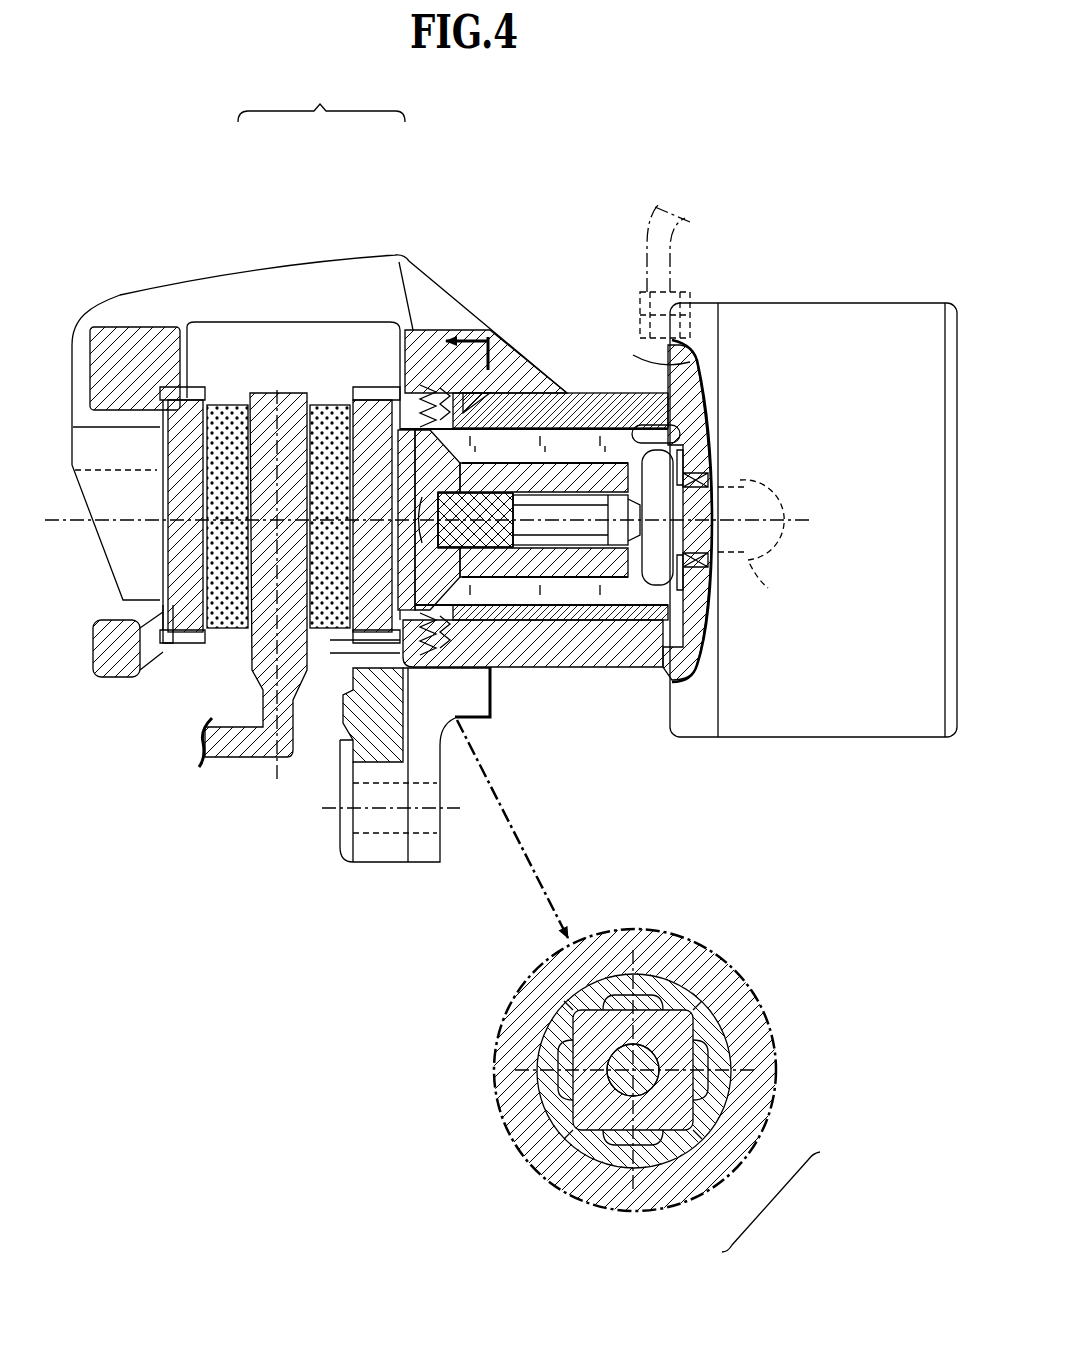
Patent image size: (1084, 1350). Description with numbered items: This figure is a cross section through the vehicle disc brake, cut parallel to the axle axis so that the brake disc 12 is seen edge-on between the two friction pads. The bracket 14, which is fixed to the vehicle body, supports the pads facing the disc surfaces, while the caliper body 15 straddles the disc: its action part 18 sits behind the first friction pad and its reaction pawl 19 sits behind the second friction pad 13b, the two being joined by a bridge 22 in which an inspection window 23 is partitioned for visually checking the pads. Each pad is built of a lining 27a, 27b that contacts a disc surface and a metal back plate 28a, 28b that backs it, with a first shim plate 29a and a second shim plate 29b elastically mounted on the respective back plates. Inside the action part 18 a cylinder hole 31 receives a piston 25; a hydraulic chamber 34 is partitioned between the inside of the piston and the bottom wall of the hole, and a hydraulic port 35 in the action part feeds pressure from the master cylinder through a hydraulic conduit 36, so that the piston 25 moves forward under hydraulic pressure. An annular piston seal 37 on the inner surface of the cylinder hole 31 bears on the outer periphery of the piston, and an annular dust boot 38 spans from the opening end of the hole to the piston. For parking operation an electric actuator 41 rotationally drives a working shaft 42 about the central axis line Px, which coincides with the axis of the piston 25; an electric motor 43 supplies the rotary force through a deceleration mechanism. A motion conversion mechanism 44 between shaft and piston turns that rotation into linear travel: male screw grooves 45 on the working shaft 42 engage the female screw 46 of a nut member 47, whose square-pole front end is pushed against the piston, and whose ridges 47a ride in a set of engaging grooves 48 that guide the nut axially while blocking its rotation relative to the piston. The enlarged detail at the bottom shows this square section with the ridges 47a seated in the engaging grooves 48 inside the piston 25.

The brake disc 12 is at (267, 430).
The second friction pad 13b is at (110, 695).
The bracket 14 is at (383, 868).
The caliper body 15 is at (321, 100).
The action part 18 is at (486, 312).
The reaction pawl 19 is at (84, 334).
The bridge 22 is at (328, 258).
The inspection window 23 is at (180, 347).
The piston 25 is at (585, 624).
The lining 27a is at (323, 652).
The lining 27b is at (225, 632).
The metal back plate 28a is at (333, 640).
The metal back plate 28b is at (177, 628).
The first shim plate 29a is at (402, 410).
The second shim plate 29b is at (157, 533).
The cylinder hole 31 is at (680, 458).
The hydraulic chamber 34 is at (641, 441).
The hydraulic port 35 is at (693, 362).
The hydraulic conduit 36 is at (688, 250).
The annular piston seal 37 is at (507, 397).
The annular dust boot 38 is at (453, 363).
The electric actuator 41 is at (846, 742).
The working shaft 42 is at (560, 553).
The electric motor 43 is at (770, 740).
The motion conversion mechanism 44 is at (530, 452).
The male screw grooves 45 is at (516, 605).
The female screw 46 is at (420, 530).
The nut member 47 is at (599, 574).
The ridges 47a is at (573, 1013).
The engaging grooves 48 is at (695, 1103).
The central axis line Px is at (759, 543).